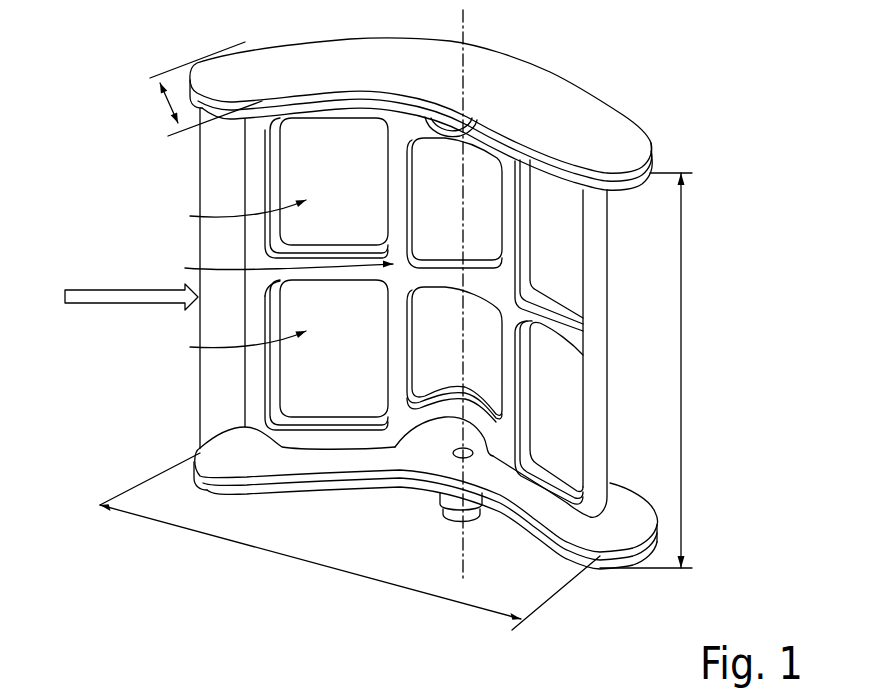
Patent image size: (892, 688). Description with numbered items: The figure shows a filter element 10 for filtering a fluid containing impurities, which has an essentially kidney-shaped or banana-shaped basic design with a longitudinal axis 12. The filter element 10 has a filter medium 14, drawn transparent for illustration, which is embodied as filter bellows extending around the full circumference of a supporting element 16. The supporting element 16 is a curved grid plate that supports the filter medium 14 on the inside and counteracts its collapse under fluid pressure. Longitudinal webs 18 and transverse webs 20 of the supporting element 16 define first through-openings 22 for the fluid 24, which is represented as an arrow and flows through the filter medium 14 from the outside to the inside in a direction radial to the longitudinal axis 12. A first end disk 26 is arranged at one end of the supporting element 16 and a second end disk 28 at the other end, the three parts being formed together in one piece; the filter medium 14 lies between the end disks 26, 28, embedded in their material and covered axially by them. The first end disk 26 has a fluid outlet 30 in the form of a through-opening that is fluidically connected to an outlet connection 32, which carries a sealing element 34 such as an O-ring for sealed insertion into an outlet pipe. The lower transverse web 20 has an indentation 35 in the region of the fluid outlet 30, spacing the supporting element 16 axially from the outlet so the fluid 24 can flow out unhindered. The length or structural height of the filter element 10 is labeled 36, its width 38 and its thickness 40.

The filter element 10 is at (633, 108).
The longitudinal axis 12 is at (465, 18).
The filter medium 14 is at (200, 181).
The supporting element 16 is at (270, 266).
The longitudinal webs 18 is at (270, 183).
The transverse webs 20 is at (430, 135).
The first through-openings 22 is at (230, 280).
The fluid 24 is at (105, 290).
The first end disk 26 is at (590, 562).
The second end disk 28 is at (592, 132).
The fluid outlet 30 is at (455, 456).
The outlet connection 32 is at (444, 529).
The sealing element 34 is at (477, 520).
The indentation 35 is at (476, 454).
The length or structural height 36 is at (683, 378).
The width 38 is at (303, 559).
The thickness 40 is at (168, 105).